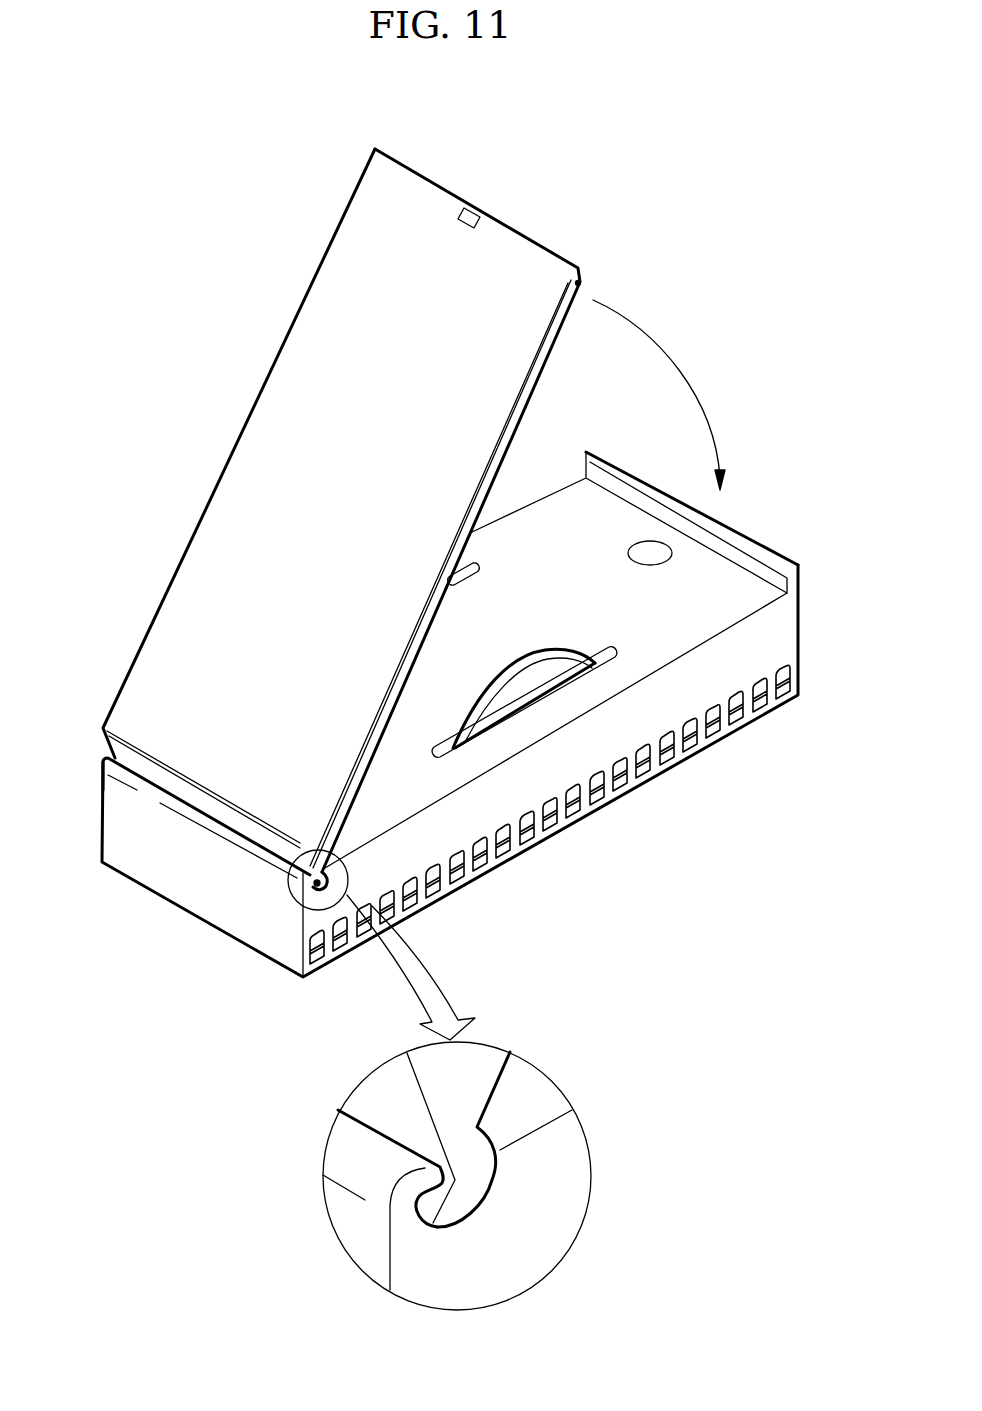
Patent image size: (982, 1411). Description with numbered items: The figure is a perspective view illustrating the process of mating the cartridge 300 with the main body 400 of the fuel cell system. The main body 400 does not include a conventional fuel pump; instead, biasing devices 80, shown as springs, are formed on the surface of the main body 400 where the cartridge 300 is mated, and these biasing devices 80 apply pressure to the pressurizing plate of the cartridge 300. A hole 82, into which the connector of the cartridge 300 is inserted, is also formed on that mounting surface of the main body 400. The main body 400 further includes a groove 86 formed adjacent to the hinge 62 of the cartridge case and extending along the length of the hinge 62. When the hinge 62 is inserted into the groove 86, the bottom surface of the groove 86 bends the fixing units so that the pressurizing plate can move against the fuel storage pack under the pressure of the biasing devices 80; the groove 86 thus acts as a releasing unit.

The cartridge 300 is at (347, 526).
The main body 400 is at (147, 873).
The biasing devices 80 is at (482, 708).
The hole 82 is at (650, 553).
The groove 86 is at (423, 1178).
The hinge 62 is at (468, 1190).